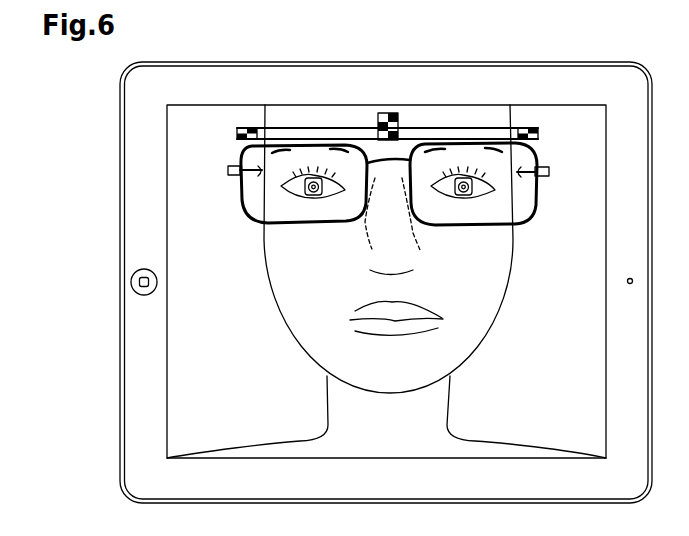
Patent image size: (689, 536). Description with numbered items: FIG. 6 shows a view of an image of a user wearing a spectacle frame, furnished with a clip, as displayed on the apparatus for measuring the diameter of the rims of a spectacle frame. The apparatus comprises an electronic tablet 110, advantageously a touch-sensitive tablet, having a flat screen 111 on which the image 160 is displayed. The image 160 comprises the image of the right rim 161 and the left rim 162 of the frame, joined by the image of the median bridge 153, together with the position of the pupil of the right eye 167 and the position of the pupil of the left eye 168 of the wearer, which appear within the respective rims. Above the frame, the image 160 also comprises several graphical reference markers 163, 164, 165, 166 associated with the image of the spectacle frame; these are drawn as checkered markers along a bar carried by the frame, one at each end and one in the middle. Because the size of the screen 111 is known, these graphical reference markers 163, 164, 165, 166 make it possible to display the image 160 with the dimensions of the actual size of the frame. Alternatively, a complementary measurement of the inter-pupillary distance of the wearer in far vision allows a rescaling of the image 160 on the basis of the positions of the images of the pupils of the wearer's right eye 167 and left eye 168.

The electronic tablet 110 is at (142, 408).
The flat screen 111 is at (193, 353).
The median bridge 153 is at (405, 160).
The image 160 is at (213, 207).
The right rim 161 is at (243, 187).
The left rim 162 is at (540, 183).
The graphical reference marker 163 is at (378, 132).
The graphical reference marker 164 is at (392, 112).
The graphical reference marker 165 is at (247, 127).
The graphical reference marker 166 is at (532, 127).
The position of the pupil of the right eye 167 is at (312, 197).
The position of the pupil of the left eye 168 is at (462, 198).